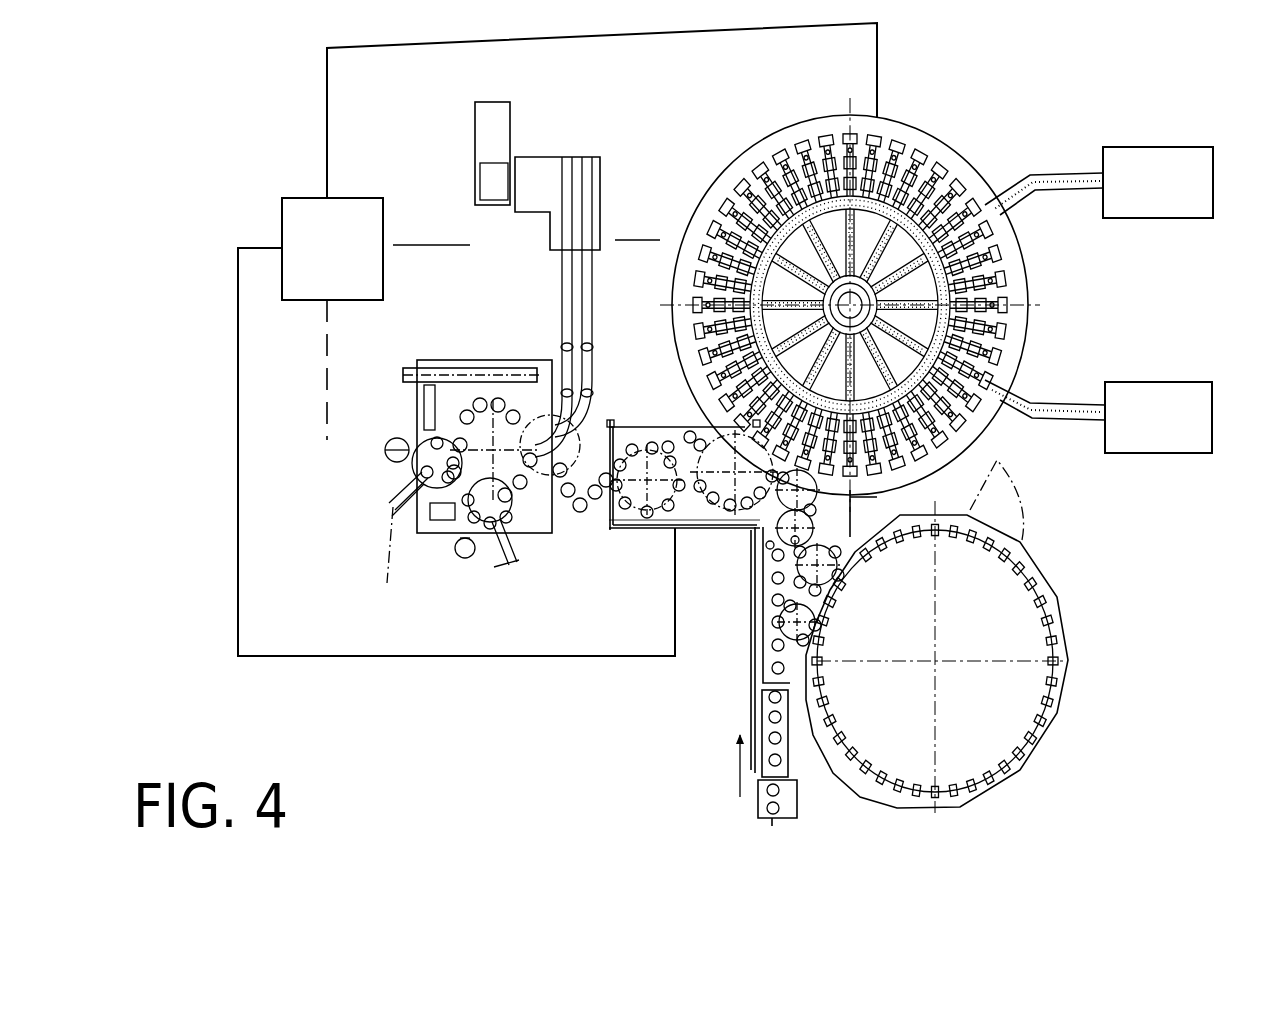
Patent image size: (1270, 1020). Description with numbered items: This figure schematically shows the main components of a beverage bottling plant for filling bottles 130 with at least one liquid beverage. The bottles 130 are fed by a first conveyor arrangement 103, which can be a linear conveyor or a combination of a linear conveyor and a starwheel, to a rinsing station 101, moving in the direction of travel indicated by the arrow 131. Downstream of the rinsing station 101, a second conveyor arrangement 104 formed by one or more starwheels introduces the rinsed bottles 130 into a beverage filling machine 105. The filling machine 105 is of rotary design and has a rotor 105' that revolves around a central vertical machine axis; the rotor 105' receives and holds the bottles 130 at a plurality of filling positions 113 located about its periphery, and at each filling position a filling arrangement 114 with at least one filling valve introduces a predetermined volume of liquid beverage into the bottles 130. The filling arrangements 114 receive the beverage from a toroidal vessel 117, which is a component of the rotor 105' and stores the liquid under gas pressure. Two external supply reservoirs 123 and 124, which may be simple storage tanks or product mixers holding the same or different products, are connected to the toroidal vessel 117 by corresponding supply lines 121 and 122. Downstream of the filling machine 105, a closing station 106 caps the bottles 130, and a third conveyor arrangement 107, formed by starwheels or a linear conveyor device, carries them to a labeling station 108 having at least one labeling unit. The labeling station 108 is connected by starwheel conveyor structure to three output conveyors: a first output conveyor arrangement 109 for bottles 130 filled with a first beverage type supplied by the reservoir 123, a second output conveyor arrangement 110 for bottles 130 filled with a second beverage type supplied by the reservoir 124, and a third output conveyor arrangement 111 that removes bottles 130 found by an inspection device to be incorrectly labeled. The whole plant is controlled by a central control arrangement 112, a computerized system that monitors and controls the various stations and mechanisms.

The rinsing station 101 is at (1082, 558).
The first conveyor arrangement 103 is at (790, 747).
The second conveyor arrangement 104 is at (767, 592).
The beverage filling machine 105 is at (901, 305).
The rotor 105' is at (850, 290).
The closing station 106 is at (665, 422).
The third conveyor arrangement 107 is at (615, 543).
The labeling station 108 is at (447, 572).
The first output conveyor arrangement 109 is at (588, 335).
The second output conveyor arrangement 110 is at (562, 285).
The third output conveyor arrangement 111 is at (450, 355).
The central control arrangement 112 is at (350, 262).
The filling positions 113 is at (1013, 235).
The filling arrangement 114 is at (1020, 327).
The toroidal vessel 117 is at (962, 455).
The supply line 121 is at (1055, 172).
The supply line 122 is at (1057, 405).
The supply reservoir 123 is at (1207, 190).
The supply reservoir 124 is at (1215, 420).
The bottles 130 is at (780, 760).
The arrow 131 is at (718, 766).